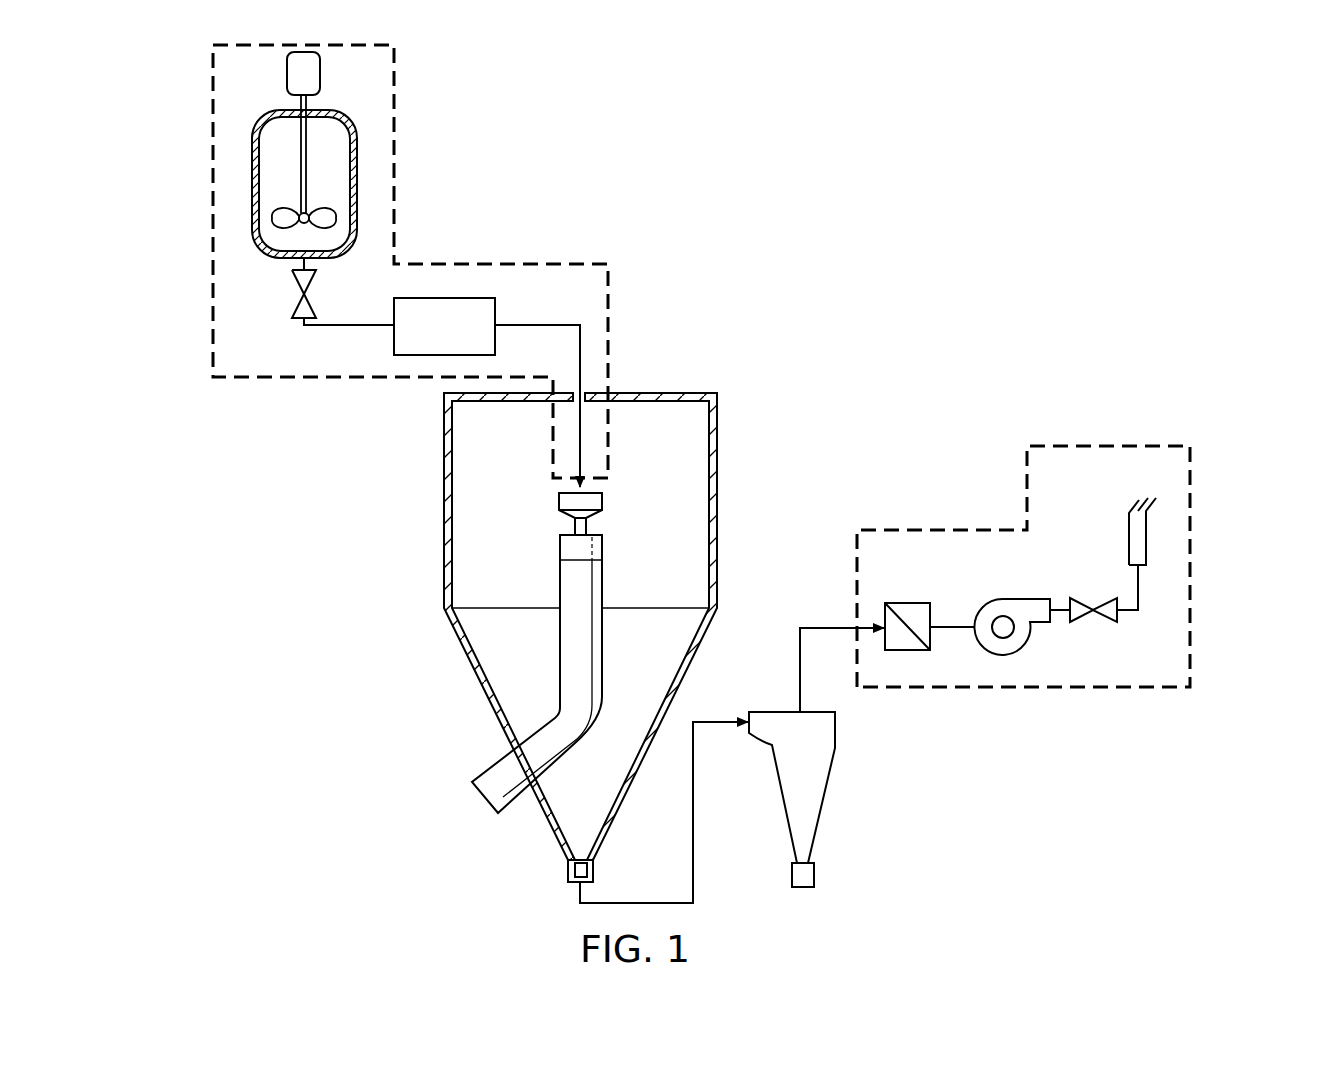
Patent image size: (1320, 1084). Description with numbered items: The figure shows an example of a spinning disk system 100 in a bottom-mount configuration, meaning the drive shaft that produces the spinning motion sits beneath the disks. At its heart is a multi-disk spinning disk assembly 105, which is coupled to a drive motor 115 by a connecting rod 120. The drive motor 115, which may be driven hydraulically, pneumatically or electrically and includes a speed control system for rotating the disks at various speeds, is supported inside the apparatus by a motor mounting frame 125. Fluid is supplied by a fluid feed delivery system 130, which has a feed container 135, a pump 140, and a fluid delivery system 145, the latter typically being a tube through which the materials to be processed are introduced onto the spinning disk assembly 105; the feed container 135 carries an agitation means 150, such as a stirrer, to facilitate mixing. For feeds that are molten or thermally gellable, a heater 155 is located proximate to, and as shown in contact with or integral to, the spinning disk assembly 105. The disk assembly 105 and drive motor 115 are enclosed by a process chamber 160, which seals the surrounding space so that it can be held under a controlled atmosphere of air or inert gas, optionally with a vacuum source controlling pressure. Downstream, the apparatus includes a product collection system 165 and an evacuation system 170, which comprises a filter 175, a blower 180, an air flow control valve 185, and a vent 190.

The spinning disk system 100 is at (839, 311).
The multi-disk spinning disk assembly 105 is at (557, 500).
The drive motor 115 is at (560, 548).
The connecting rod 120 is at (588, 532).
The motor mounting frame 125 is at (560, 628).
The fluid feed delivery system 130 is at (398, 127).
The feed container 135 is at (270, 113).
The pump 140 is at (394, 340).
The fluid delivery system 145 is at (539, 325).
The agitation means 150 is at (310, 203).
The heater 155 is at (557, 520).
The process chamber 160 is at (678, 408).
The product collection system 165 is at (825, 805).
The evacuation system 170 is at (1108, 445).
The filter 175 is at (905, 603).
The blower 180 is at (1020, 599).
The air flow control valve 185 is at (1097, 623).
The vent 190 is at (1124, 534).